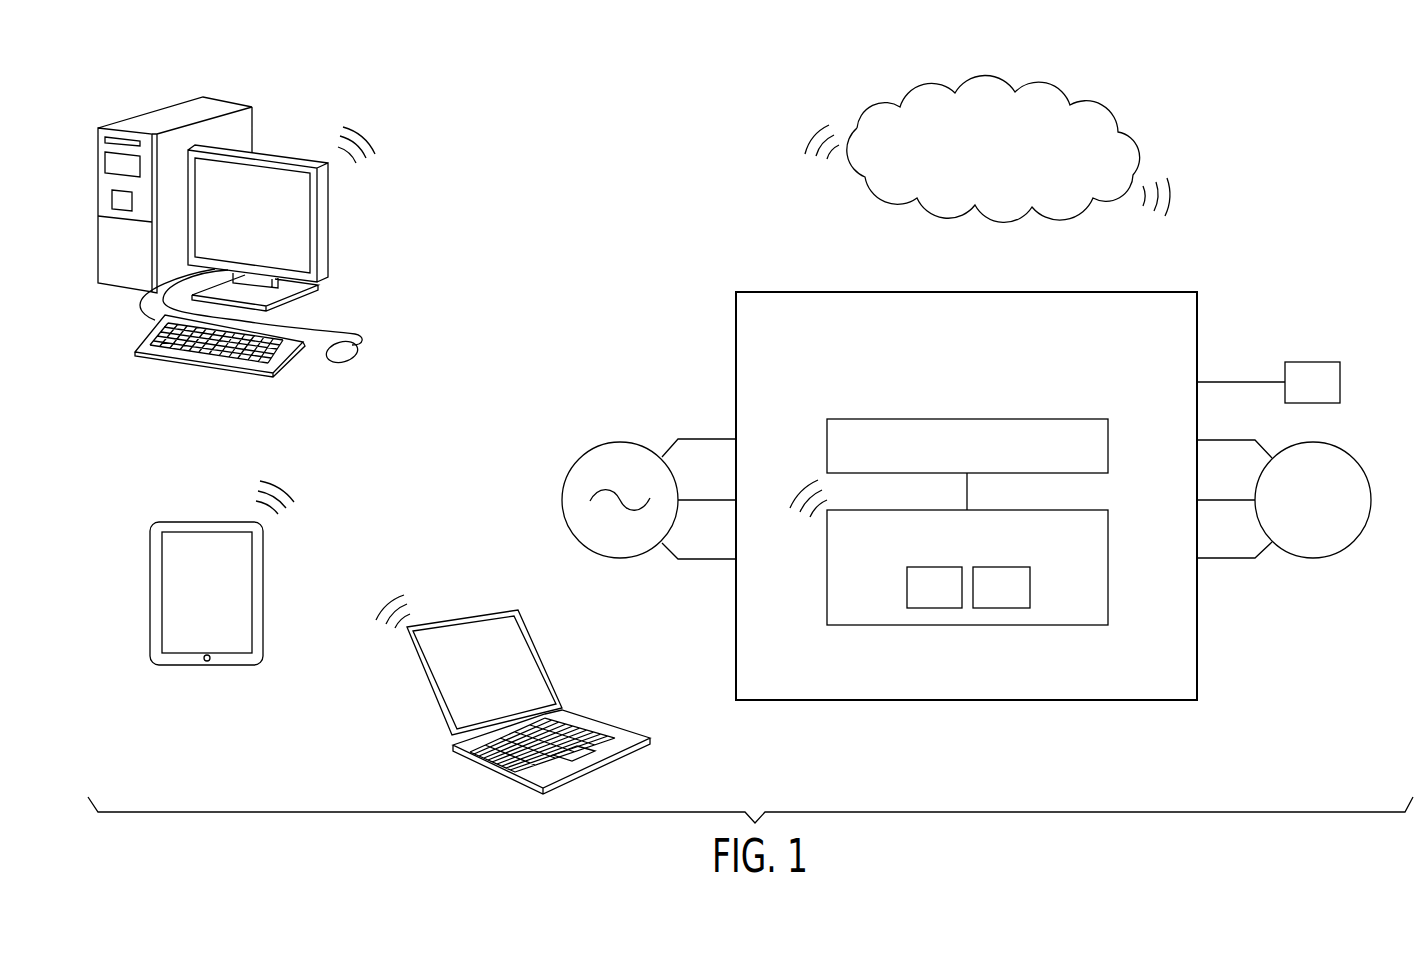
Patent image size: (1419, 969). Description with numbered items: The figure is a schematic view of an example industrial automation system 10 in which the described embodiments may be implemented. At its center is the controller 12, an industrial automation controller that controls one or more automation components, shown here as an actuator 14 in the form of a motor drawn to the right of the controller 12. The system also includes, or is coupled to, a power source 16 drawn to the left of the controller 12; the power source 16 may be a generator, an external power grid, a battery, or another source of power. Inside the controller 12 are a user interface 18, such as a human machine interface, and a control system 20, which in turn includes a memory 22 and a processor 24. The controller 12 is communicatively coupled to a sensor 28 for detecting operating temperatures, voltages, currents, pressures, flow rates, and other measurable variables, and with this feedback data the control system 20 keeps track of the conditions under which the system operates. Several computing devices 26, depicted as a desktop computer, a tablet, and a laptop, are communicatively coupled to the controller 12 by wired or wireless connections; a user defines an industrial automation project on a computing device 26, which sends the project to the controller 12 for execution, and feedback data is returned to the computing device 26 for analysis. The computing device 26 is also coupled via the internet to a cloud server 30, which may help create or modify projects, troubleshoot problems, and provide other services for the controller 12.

The industrial automation system 10 is at (663, 308).
The controller 12 is at (965, 292).
The actuator 14 is at (1312, 442).
The power source 16 is at (620, 441).
The user interface 18 is at (1108, 445).
The control system 20 is at (1108, 568).
The memory 22 is at (907, 583).
The processor 24 is at (1030, 583).
The computing device 26 is at (328, 218).
The sensor 28 is at (1312, 362).
The cloud server 30 is at (1103, 103).